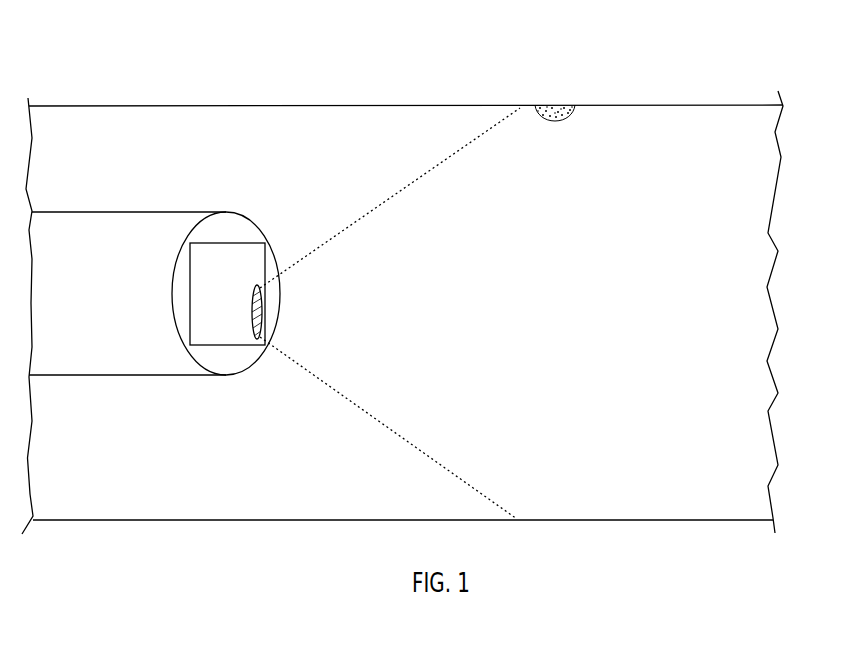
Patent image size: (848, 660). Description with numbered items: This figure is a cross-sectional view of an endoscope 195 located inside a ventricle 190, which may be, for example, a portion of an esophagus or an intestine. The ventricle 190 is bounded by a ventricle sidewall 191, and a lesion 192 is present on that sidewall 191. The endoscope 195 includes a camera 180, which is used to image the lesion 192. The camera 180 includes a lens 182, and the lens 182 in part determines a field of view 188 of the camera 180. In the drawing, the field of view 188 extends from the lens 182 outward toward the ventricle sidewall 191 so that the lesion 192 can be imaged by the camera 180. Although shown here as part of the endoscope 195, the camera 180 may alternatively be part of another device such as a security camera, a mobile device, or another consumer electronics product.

The ventricle 190 is at (257, 93).
The ventricle sidewall 191 is at (234, 515).
The lesion 192 is at (565, 119).
The endoscope 195 is at (126, 319).
The camera 180 is at (243, 288).
The lens 182 is at (253, 310).
The field of view 188 is at (361, 226).